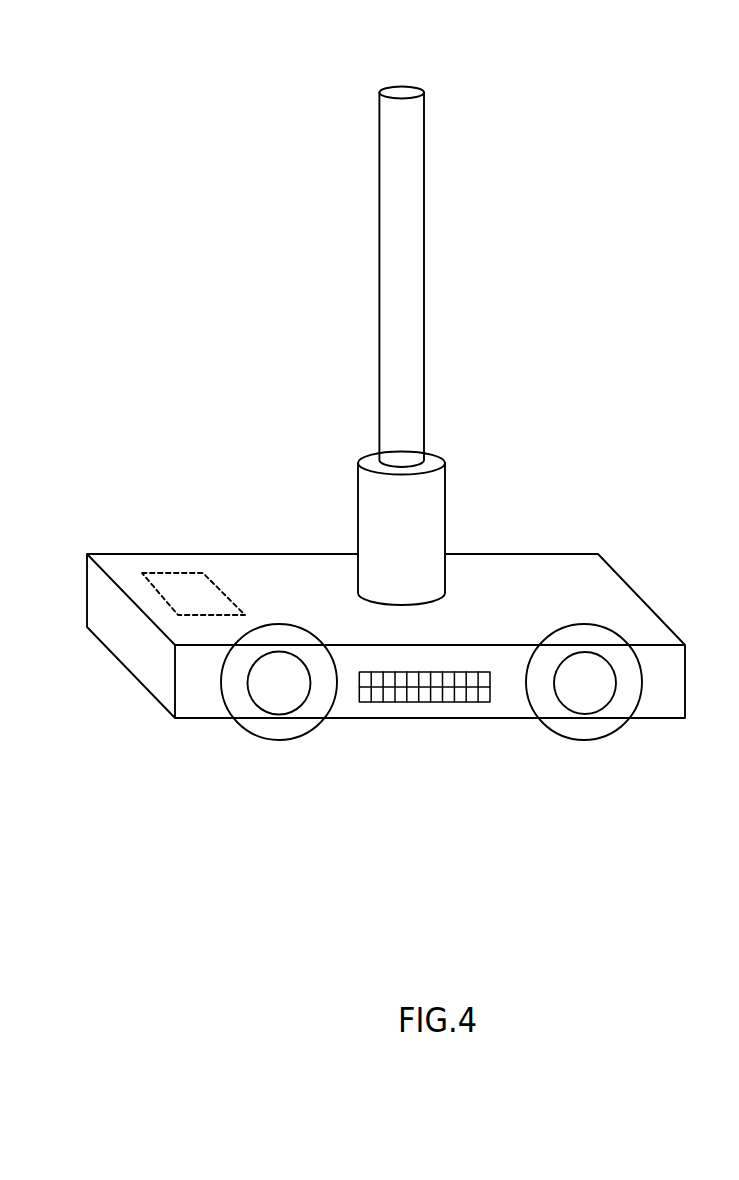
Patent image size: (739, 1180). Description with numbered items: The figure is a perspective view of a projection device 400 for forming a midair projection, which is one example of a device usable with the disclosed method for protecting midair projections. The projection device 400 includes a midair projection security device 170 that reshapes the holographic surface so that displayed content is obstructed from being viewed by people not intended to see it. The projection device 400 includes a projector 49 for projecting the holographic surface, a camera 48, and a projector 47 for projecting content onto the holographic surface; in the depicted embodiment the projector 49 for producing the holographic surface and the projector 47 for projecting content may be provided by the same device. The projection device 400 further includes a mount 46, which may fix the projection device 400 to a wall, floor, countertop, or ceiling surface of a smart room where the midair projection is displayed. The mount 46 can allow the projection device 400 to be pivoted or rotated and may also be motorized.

The projection device 400 is at (458, 61).
The mount 46 is at (400, 407).
The projector 47 is at (283, 692).
The camera 48 is at (417, 692).
The projector 49 is at (587, 692).
The midair projection security device 170 is at (185, 590).